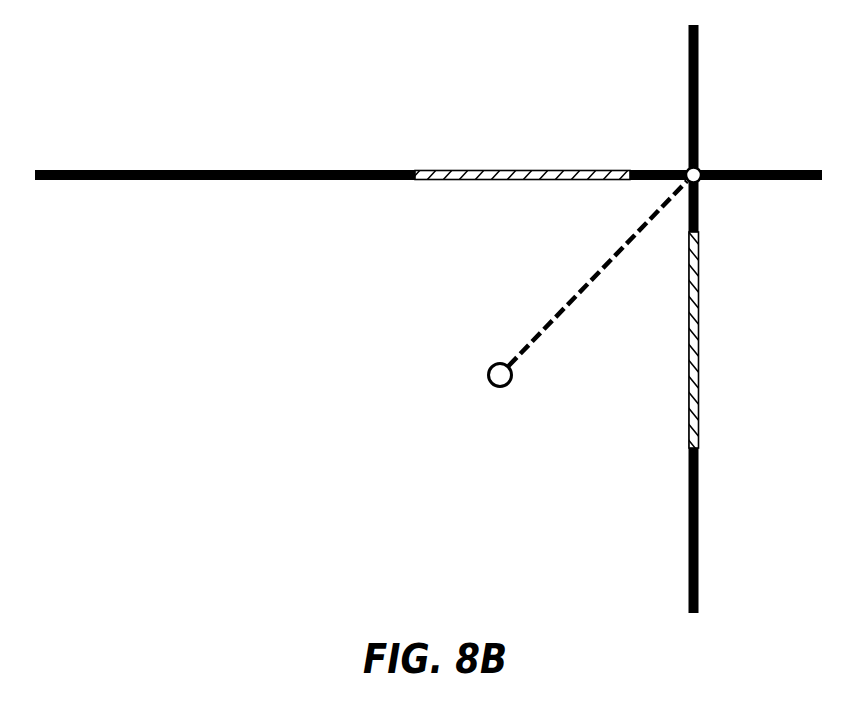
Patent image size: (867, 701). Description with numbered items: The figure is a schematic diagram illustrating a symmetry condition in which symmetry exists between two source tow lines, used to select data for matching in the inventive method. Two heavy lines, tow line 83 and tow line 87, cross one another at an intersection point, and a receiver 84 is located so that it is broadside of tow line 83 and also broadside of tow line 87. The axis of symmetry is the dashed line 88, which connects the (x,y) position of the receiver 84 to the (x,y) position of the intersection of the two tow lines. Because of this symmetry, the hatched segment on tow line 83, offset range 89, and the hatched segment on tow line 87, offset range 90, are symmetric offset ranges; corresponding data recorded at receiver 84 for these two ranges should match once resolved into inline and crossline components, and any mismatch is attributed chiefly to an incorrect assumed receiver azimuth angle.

The tow line 83 is at (735, 168).
The receiver 84 is at (498, 357).
The tow line 87 is at (698, 535).
The axis of symmetry 88 is at (590, 282).
The offset range 89 is at (525, 170).
The offset range 90 is at (698, 343).